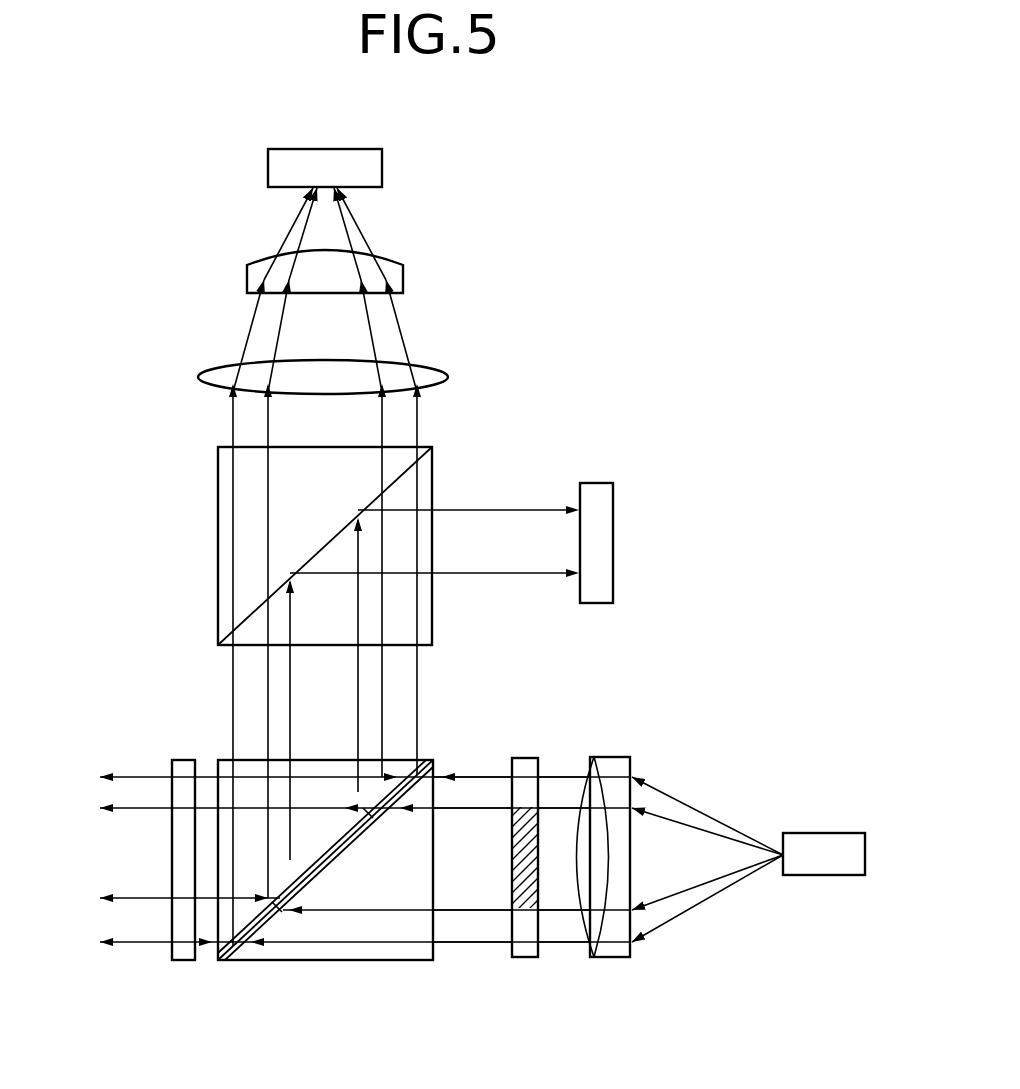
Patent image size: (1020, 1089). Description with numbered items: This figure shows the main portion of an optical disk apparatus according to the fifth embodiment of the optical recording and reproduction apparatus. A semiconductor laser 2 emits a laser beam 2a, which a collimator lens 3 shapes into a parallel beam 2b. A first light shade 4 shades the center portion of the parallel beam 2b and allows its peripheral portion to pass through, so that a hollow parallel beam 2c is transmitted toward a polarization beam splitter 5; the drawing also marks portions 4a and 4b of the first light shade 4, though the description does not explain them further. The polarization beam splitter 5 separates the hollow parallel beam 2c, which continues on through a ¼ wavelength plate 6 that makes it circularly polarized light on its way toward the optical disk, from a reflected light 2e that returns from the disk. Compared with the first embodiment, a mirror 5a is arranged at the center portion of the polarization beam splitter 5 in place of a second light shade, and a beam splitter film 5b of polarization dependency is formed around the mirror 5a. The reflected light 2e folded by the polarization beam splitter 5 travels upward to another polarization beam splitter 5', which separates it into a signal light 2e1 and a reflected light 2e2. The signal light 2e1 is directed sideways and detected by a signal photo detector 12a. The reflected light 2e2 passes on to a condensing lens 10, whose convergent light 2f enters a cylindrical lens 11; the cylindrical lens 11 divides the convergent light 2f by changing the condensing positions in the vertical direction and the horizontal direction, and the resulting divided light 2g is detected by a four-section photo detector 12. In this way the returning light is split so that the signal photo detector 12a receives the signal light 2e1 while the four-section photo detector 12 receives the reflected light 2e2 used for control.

The semiconductor laser 2 is at (826, 872).
The laser beam 2a is at (706, 897).
The parallel beam 2b is at (573, 897).
The hollow parallel beam 2c is at (495, 945).
The reflected light 2e is at (231, 695).
The signal light 2e1 is at (505, 508).
The reflected light 2e2 is at (231, 424).
The convergent light 2f is at (250, 325).
The divided light 2g is at (293, 224).
The collimator lens 3 is at (616, 758).
The first light shade 4 is at (524, 758).
The phase plate portion 4a is at (540, 900).
The phase plate portion 4b is at (536, 790).
The polarization beam splitter 5 is at (325, 900).
The mirror 5a is at (332, 868).
The beam splitter film 5b is at (233, 960).
The polarization beam splitter 5' is at (291, 546).
The ¼ wavelength plate 6 is at (183, 962).
The condensing lens 10 is at (447, 372).
The cylindrical lens 11 is at (404, 280).
The four-section photo detector 12 is at (383, 165).
The signal photo detector 12a is at (614, 540).